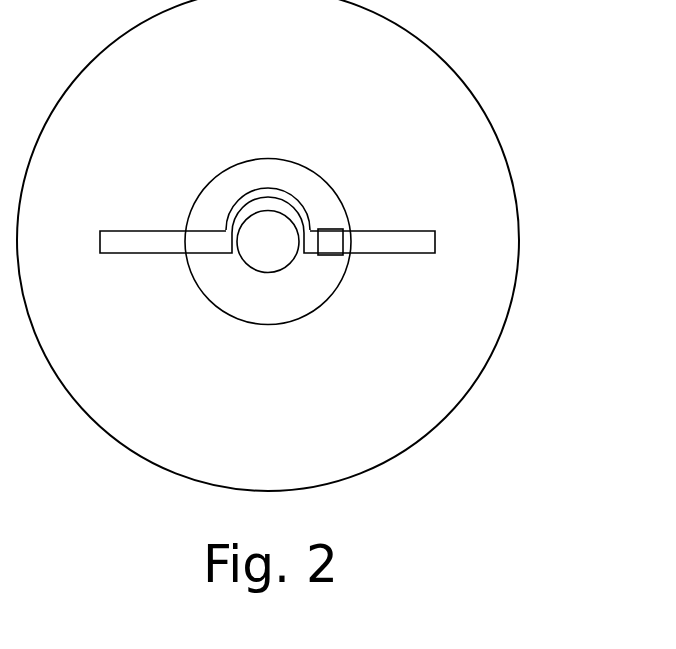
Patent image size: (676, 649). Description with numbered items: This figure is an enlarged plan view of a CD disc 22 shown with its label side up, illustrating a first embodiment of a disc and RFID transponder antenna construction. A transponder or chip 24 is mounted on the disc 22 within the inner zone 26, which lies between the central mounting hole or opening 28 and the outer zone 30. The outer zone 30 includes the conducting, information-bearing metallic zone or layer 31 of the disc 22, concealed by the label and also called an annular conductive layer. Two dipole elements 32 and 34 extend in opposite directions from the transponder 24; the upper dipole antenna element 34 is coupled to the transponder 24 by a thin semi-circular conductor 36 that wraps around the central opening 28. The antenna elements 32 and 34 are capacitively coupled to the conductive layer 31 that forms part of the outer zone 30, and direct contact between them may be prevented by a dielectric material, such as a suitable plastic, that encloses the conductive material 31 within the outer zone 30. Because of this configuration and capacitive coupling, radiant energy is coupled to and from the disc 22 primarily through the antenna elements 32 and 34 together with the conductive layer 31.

The CD disc 22 is at (437, 52).
The transponder 24 is at (332, 243).
The inner zone 26 is at (284, 314).
The central mounting hole 28 is at (284, 254).
The outer zone 30 is at (284, 85).
The annular conductive layer 31 is at (433, 365).
The dipole antenna element 32 is at (413, 242).
The upper dipole antenna element 34 is at (142, 242).
The semi-circular conductor 36 is at (267, 199).